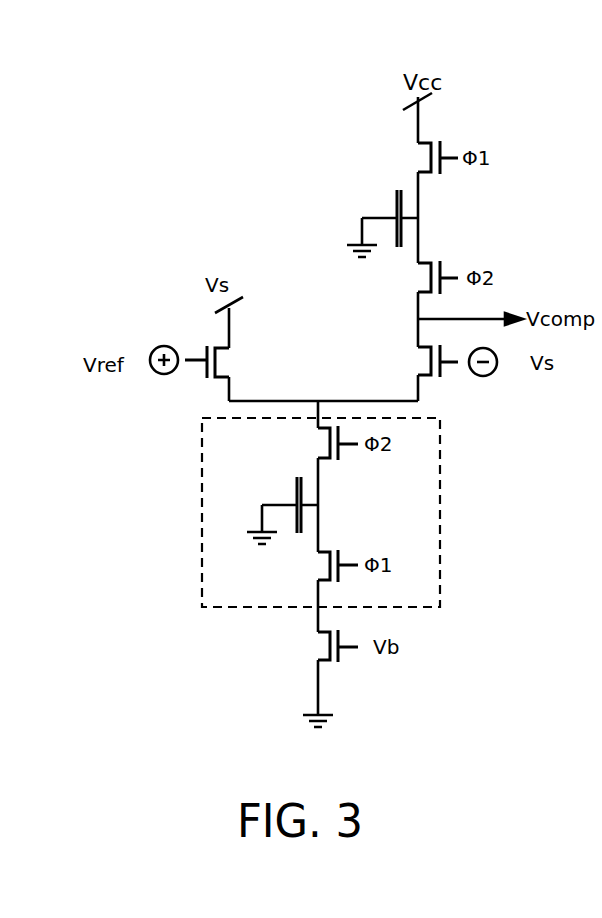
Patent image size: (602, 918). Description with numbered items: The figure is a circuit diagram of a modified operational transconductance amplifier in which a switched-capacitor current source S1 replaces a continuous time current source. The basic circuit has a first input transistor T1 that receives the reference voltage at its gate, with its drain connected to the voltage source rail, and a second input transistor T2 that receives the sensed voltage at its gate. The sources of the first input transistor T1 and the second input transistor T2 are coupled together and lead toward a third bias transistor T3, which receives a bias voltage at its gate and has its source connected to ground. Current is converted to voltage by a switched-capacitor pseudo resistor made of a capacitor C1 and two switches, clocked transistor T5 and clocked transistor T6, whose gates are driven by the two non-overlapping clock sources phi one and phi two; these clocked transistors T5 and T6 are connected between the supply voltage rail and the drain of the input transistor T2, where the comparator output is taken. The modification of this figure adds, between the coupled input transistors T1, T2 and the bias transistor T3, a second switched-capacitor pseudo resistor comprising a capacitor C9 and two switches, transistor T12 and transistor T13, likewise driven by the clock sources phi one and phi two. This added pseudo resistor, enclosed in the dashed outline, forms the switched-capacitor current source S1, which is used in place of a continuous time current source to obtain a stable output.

The clocked transistor T5 is at (430, 158).
The capacitor C1 is at (395, 213).
The clocked transistor T6 is at (430, 278).
The second input transistor T2 is at (430, 362).
The first input transistor T1 is at (216, 363).
The switched-capacitor current source S1 is at (202, 495).
The transistor T12 is at (330, 444).
The capacitor C9 is at (297, 495).
The transistor T13 is at (330, 570).
The third bias transistor T3 is at (330, 645).